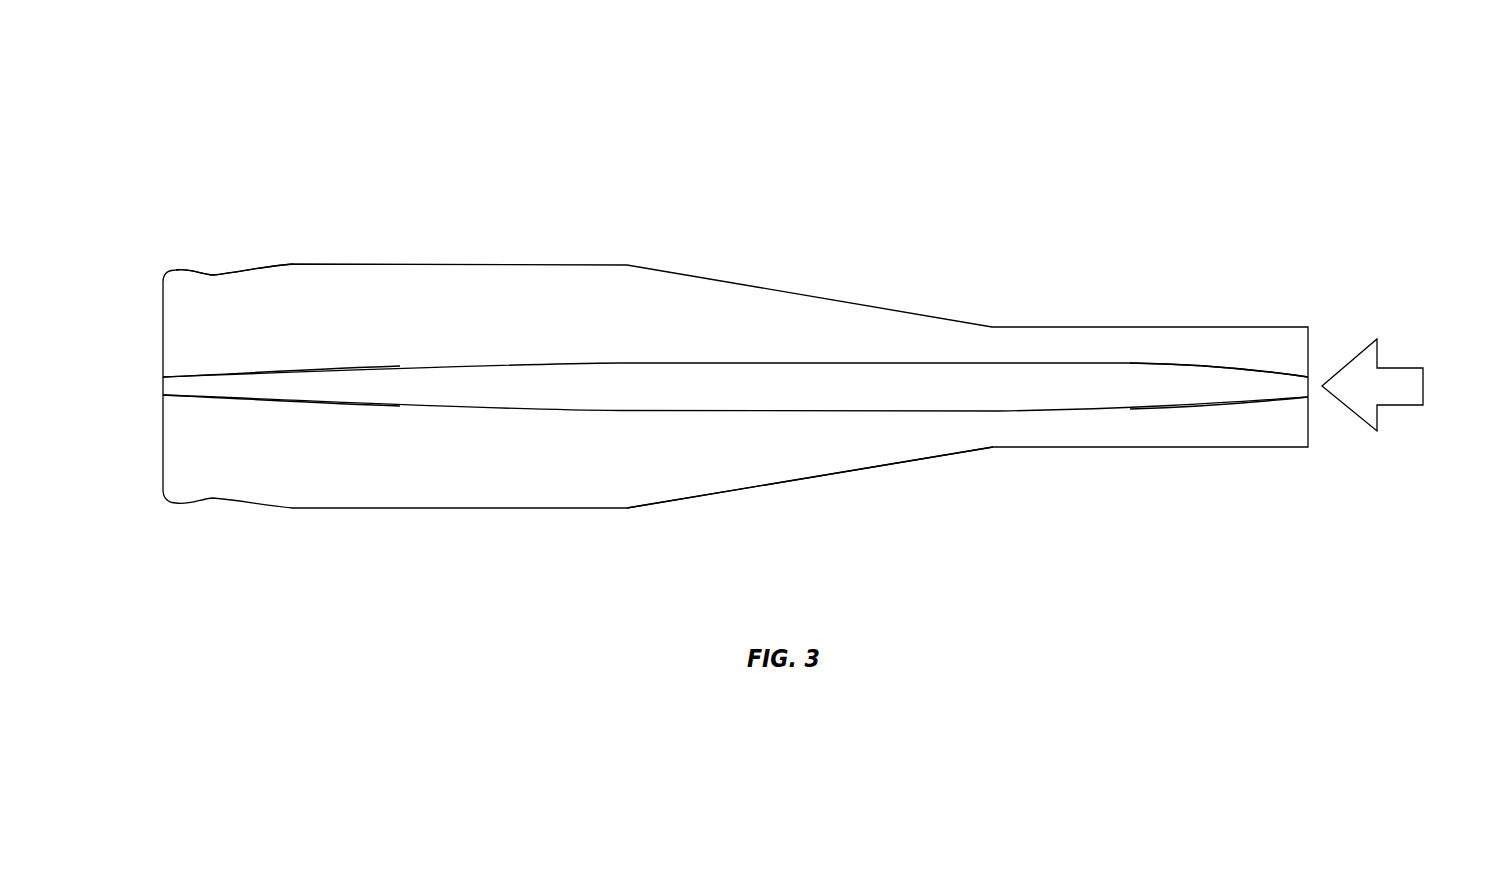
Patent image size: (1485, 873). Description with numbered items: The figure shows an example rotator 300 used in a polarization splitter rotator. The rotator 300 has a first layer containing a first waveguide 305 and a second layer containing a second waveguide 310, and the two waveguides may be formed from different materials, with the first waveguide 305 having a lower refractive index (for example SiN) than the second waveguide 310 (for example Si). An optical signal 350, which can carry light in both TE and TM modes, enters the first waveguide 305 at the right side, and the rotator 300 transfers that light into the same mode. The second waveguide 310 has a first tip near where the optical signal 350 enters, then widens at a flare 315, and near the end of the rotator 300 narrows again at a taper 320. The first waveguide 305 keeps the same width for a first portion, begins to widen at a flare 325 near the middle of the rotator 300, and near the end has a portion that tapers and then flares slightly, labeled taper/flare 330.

The rotator 300 is at (698, 329).
The first waveguide 305 is at (160, 331).
The second waveguide 310 is at (520, 407).
The flare 315 is at (1246, 406).
The taper 320 is at (205, 404).
The flare 325 is at (819, 490).
The taper/flare 330 is at (208, 266).
The optical signal 350 is at (1395, 406).